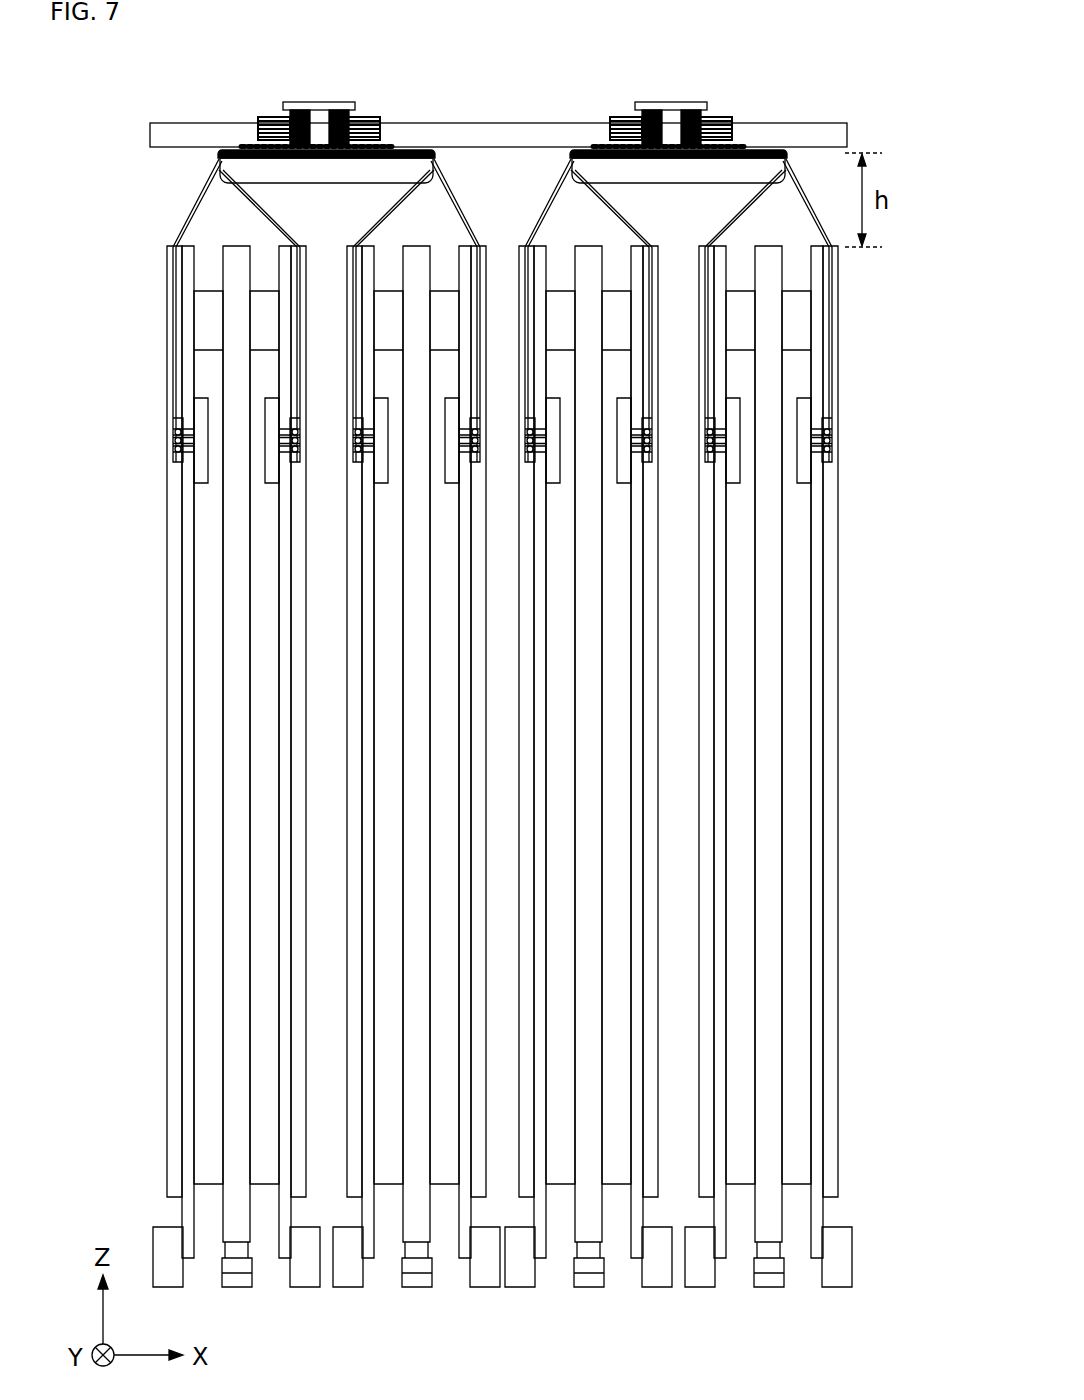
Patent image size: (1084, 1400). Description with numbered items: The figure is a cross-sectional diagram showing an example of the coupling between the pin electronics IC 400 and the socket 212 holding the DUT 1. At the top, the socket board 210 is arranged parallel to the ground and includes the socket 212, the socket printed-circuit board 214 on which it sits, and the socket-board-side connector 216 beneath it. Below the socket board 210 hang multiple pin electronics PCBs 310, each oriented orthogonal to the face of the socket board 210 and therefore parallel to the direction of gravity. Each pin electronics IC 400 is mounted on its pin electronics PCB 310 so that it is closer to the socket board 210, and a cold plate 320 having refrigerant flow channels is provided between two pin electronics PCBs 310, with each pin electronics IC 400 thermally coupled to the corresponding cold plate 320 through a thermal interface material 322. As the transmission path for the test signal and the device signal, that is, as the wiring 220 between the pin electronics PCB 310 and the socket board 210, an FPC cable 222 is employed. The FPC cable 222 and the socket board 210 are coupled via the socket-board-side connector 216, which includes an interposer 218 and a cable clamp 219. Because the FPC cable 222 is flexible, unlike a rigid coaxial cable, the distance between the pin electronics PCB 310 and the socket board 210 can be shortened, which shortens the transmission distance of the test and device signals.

The DUT 1 is at (319, 100).
The socket board 210 is at (890, 107).
The socket 212 is at (388, 93).
The socket printed-circuit board 214 is at (810, 132).
The socket-board-side connector 216 is at (135, 152).
The interposer 218 is at (230, 151).
The cable clamp 219 is at (247, 180).
The wiring 220 is at (452, 310).
The FPC cable 222 is at (182, 223).
The pin electronics PCB 310 is at (368, 1248).
The cold plate 320 is at (422, 1222).
The thermal interface material 322 is at (205, 373).
The pin electronics IC 400 is at (200, 470).